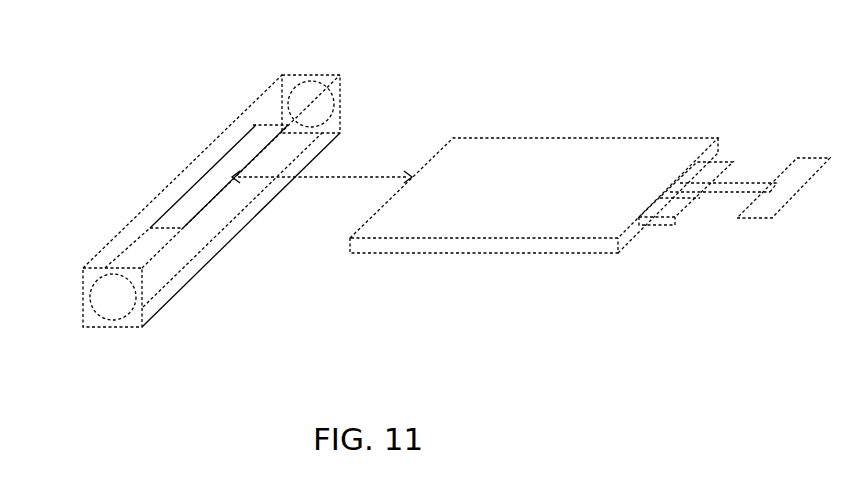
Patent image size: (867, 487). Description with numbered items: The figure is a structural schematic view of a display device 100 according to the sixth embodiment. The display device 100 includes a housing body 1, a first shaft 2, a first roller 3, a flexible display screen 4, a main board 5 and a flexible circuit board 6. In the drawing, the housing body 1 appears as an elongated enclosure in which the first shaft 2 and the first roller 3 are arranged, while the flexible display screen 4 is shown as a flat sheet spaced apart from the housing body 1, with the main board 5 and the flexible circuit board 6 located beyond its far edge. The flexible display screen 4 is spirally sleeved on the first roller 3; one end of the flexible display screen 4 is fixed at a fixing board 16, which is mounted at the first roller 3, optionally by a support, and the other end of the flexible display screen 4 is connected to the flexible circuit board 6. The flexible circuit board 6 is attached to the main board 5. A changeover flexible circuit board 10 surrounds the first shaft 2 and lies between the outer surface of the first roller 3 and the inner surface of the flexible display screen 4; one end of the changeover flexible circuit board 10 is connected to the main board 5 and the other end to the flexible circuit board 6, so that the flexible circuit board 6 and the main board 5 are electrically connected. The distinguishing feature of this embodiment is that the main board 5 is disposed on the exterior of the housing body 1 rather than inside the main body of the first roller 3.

The display device 100 is at (128, 106).
The housing body 1 is at (211, 191).
The fixing board 16 is at (196, 196).
The first roller 3 is at (104, 198).
The first shaft 2 is at (176, 233).
The flexible display screen 4 is at (534, 149).
The flexible circuit board 6 is at (694, 216).
The changeover flexible circuit board 10 is at (753, 135).
The main board 5 is at (783, 214).